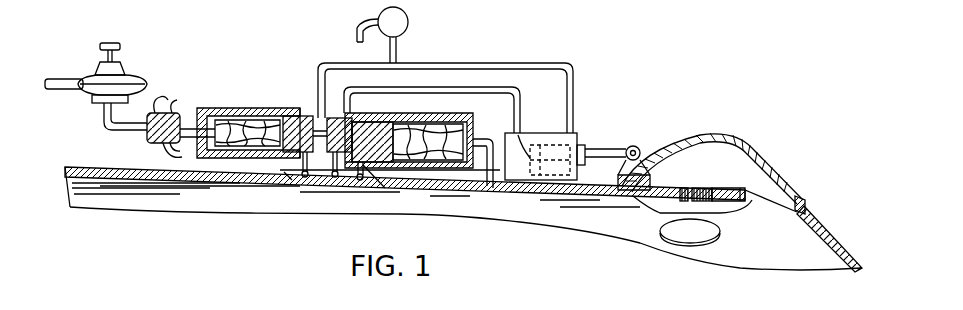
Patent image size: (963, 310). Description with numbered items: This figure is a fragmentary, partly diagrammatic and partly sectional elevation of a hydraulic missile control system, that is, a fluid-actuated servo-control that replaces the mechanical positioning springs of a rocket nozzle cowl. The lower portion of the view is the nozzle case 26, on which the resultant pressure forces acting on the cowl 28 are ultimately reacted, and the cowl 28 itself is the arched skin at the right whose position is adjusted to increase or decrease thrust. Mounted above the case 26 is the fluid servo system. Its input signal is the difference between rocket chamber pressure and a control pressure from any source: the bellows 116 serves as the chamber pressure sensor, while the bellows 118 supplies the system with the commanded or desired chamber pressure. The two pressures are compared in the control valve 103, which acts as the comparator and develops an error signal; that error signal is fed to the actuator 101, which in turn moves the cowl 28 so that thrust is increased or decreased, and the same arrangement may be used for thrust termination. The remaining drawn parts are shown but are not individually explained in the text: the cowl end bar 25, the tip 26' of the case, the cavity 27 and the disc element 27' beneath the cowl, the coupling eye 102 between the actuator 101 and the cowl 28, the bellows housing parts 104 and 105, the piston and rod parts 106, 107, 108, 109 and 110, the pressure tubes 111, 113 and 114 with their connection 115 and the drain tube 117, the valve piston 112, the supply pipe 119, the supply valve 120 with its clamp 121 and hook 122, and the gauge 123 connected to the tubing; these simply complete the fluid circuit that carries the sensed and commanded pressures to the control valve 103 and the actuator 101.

The end bar of arch 25 is at (806, 203).
The case 26 is at (442, 218).
The hull tip 26' is at (803, 246).
The cavity 27 is at (706, 222).
The disc element 27' is at (670, 226).
The cowl 28 is at (776, 162).
The actuator 101 is at (578, 137).
The eye coupling 102 is at (638, 150).
The control valve 103 is at (234, 102).
The first bellows 104 is at (248, 112).
The piston 105 is at (278, 114).
The piston rod 106 is at (310, 117).
The pin 107 is at (337, 182).
The pin 108 is at (330, 180).
The pin 109 is at (386, 189).
The pin 110 is at (284, 180).
The tube 111 is at (323, 98).
The second piston 112 is at (355, 120).
The outer tube 113 is at (572, 100).
The inner tube 114 is at (519, 96).
The connection 115 is at (527, 138).
The bellows 116 is at (455, 118).
The drain tube 117 is at (494, 188).
The bellows 118 is at (218, 108).
The pipe 119 is at (120, 131).
The valve 120 is at (100, 65).
The clamp 121 is at (149, 115).
The hook 122 is at (160, 150).
The gauge 123 is at (409, 20).